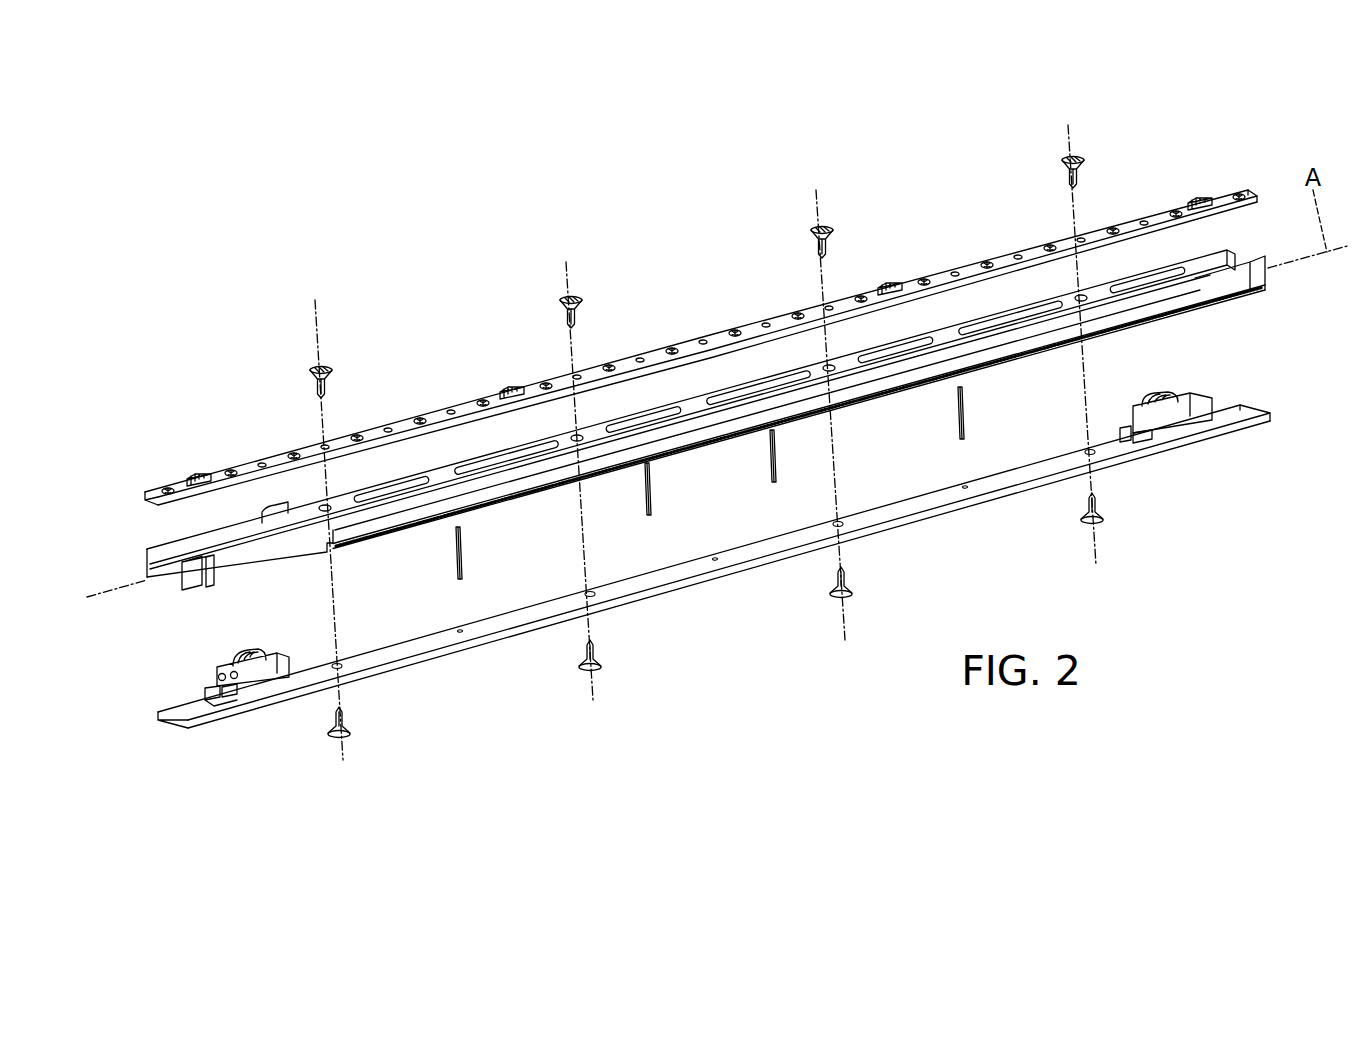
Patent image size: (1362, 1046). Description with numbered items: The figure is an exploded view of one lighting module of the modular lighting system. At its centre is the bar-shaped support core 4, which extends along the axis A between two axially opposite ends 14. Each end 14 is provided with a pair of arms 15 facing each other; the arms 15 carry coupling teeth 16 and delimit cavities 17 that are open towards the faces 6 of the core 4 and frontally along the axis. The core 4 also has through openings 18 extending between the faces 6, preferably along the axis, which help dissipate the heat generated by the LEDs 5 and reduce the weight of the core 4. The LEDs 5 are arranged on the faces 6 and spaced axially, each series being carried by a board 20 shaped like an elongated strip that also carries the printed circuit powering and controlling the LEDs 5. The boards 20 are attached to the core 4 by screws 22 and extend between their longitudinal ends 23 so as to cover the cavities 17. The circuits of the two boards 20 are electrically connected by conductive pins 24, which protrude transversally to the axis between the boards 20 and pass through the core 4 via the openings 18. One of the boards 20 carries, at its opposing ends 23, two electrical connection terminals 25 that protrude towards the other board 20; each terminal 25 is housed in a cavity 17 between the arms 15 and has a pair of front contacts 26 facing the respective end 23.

The support core 4 is at (723, 430).
The LEDs 5 is at (421, 417).
The face 6 is at (384, 481).
The axially opposite ends 14 is at (689, 391).
The arms 15 is at (156, 573).
The coupling teeth 16 is at (147, 531).
The cavities 17 is at (691, 351).
The through openings 18 is at (488, 453).
The board 20 is at (725, 449).
The screws 22 is at (836, 243).
The longitudinal ends 23 is at (158, 492).
The conductive pins 24 is at (462, 543).
The electrical connection terminals 25 is at (708, 588).
The front contacts 26 is at (231, 697).